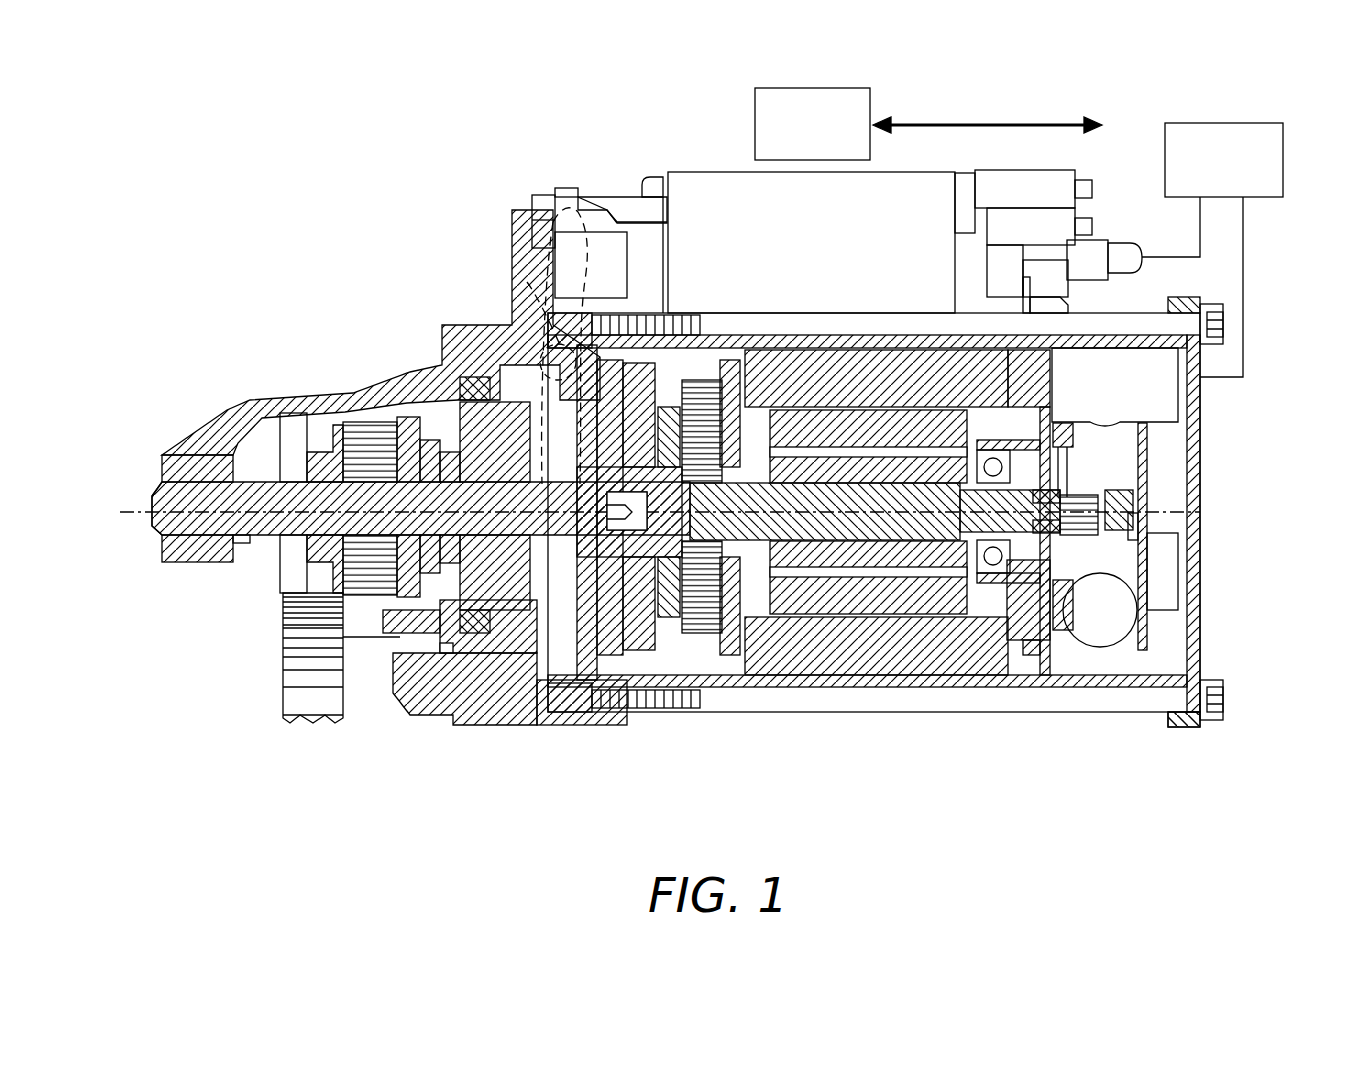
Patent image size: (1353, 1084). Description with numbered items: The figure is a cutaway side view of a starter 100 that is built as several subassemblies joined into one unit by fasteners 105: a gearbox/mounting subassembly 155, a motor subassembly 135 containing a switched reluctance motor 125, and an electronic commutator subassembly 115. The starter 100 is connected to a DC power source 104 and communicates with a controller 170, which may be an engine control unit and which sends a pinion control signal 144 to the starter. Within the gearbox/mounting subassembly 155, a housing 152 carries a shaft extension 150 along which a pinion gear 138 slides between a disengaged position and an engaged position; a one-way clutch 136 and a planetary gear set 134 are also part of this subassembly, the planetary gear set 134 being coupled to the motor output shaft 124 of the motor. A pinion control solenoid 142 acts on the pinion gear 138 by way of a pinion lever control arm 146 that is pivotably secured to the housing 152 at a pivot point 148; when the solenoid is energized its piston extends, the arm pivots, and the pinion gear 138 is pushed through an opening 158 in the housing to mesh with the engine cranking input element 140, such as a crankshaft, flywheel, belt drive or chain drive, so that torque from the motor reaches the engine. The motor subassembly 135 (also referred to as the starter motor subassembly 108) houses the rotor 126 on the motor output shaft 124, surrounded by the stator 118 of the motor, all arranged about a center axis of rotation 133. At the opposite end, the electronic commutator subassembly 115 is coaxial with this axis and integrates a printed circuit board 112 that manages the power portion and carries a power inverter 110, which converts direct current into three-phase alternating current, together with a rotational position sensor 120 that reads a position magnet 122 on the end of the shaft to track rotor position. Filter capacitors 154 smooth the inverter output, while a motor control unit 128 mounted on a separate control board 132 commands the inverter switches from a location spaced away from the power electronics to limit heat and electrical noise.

The starter 100 is at (300, 285).
The DC power source 104 is at (1203, 177).
The fasteners 105 is at (1218, 325).
The starter motor subassembly 108 is at (762, 718).
The power inverter 110 is at (1036, 630).
The printed circuit board (PCB) 112 is at (1047, 650).
The electronic commutator subassembly 115 is at (1107, 735).
The stator 118 is at (878, 385).
The rotational position sensor 120 is at (1045, 470).
The position magnet 122 is at (1025, 510).
The motor output shaft 124 is at (704, 525).
The switched reluctance motor 125 is at (838, 645).
The rotor 126 is at (877, 543).
The motor control unit (MCU) 128 is at (1135, 513).
The control board 132 is at (1127, 647).
The center axis of rotation 133 is at (153, 513).
The planetary gear set 134 is at (703, 340).
The motor subassembly 135 is at (613, 742).
The one-way clutch 136 is at (437, 578).
The pinion gear 138 is at (375, 440).
The engine cranking input element 140 is at (282, 672).
The pinion control solenoid 142 is at (722, 203).
The pinion control signal 144 is at (958, 119).
The pinion lever control arm 146 is at (527, 282).
The pivot point 148 is at (535, 335).
The shaft extension 150 is at (283, 572).
The housing 152 is at (262, 396).
The capacitors 154 is at (1127, 382).
The gearbox/mounting subassembly 155 is at (432, 735).
The opening 158 is at (297, 545).
The controller 170 is at (793, 141).